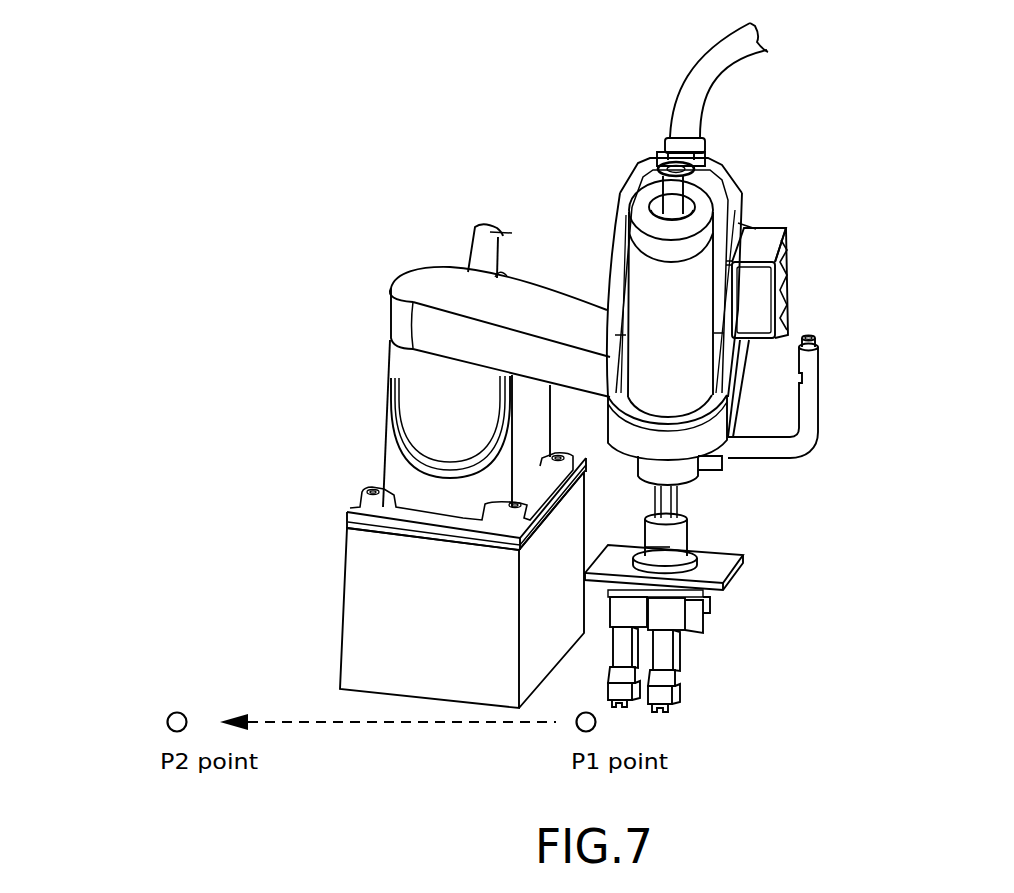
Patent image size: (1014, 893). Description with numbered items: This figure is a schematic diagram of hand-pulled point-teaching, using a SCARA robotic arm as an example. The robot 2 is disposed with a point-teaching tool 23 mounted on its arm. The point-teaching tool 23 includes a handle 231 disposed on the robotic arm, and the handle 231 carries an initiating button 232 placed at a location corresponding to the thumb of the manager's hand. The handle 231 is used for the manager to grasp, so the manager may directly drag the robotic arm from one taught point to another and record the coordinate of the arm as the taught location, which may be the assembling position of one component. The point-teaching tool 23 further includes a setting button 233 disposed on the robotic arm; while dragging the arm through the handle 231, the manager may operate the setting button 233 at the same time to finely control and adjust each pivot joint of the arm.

The robot 2 is at (320, 360).
The point-teaching tool 23 is at (935, 162).
The handle 231 is at (810, 400).
The initiating button 232 is at (810, 337).
The setting button 233 is at (760, 232).